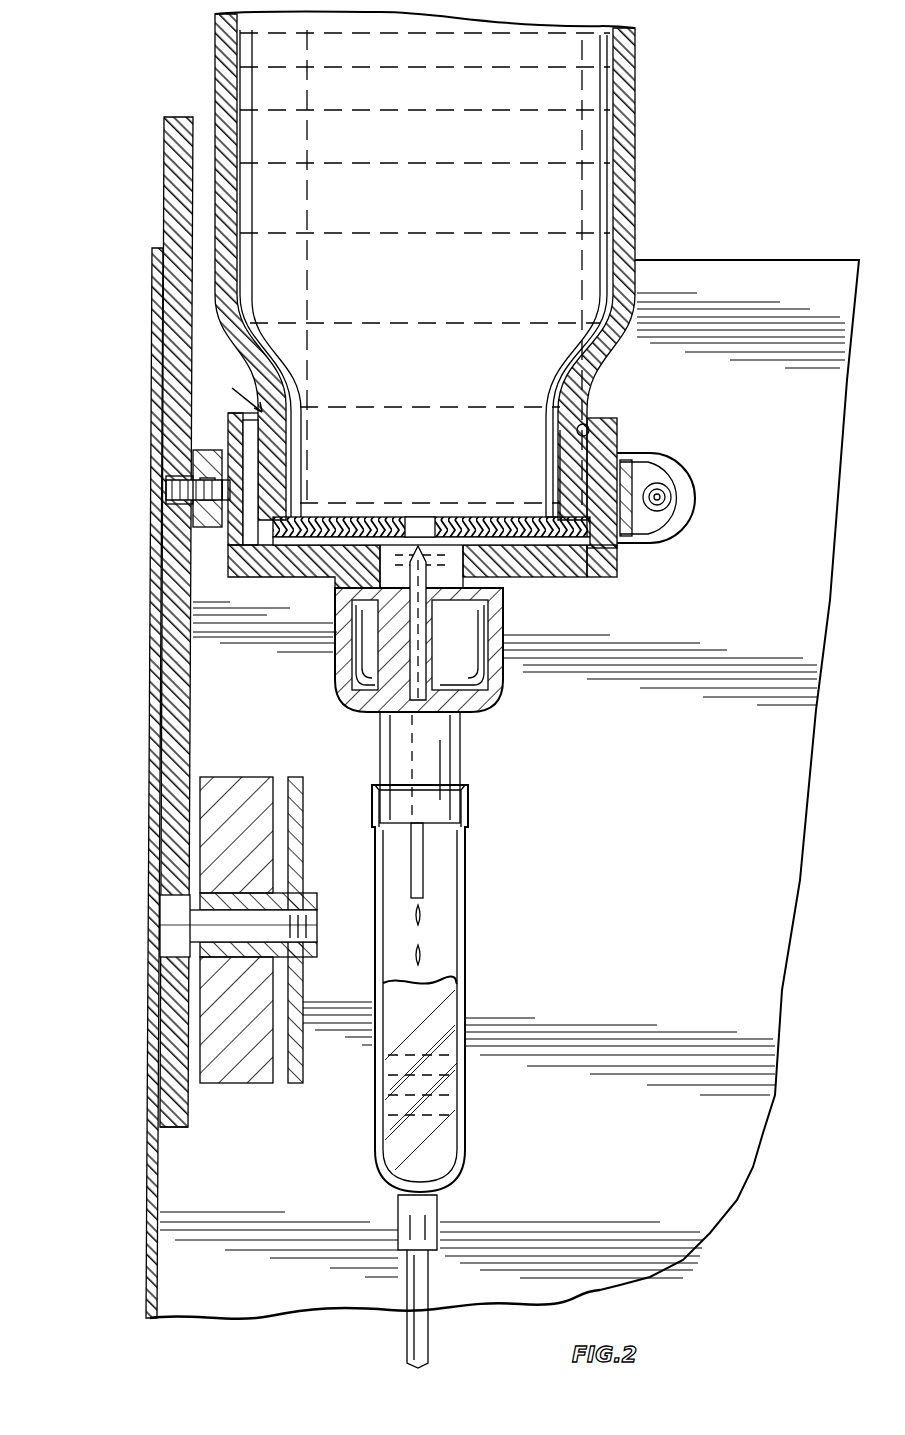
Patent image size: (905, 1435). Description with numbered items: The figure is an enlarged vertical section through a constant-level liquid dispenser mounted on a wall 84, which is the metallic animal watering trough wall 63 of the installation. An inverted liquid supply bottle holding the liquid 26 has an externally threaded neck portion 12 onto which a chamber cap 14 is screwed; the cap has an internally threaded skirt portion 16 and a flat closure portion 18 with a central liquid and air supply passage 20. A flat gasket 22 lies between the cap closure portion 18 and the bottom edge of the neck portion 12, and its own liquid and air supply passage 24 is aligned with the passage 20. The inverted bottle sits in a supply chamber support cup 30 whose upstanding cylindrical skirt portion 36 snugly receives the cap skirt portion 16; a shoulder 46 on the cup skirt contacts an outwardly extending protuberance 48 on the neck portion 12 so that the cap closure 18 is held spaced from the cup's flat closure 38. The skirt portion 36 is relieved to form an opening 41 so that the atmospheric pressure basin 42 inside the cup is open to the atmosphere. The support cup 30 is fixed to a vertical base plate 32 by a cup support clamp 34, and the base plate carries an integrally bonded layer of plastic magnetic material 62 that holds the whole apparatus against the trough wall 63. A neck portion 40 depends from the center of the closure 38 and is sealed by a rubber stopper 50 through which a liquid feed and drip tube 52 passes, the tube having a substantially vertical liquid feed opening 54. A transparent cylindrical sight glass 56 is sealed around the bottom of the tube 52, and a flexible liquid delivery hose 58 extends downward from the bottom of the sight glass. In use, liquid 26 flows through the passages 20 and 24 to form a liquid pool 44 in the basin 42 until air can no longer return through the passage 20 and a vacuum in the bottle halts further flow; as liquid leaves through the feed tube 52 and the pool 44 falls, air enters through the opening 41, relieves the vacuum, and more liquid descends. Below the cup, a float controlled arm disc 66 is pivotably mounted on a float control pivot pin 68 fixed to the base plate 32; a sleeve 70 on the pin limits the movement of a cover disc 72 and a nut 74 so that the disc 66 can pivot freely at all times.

The neck portion 12 is at (563, 452).
The chamber cap 14 is at (295, 542).
The skirt portion 16 is at (290, 472).
The flat closure portion 18 is at (575, 585).
The liquid and air supply passage 20 is at (430, 525).
The flat gasket 22 is at (540, 518).
The liquid and air supply passage 24 is at (420, 520).
The liquid 26 is at (590, 195).
The supply chamber support cup 30 is at (608, 562).
The vertical base plate 32 is at (182, 1112).
The cup support clamp 34 is at (193, 508).
The cylindrical skirt portion 36 is at (612, 480).
The flat closure 38 is at (505, 578).
The neck portion 40 is at (360, 575).
The opening 41 is at (228, 440).
The atmospheric pressure basin 42 is at (245, 530).
The liquid pool 44 is at (233, 535).
The shoulder 46 is at (600, 457).
The protuberance 48 is at (585, 430).
The rubber stopper 50 is at (498, 700).
The liquid feed and drip tube 52 is at (412, 660).
The liquid feed opening 54 is at (422, 545).
The sight glass 56 is at (468, 990).
The liquid delivery hose 58 is at (420, 1347).
The plastic magnetic material 62 is at (160, 1020).
The animal watering trough wall 63 is at (150, 1200).
The float controlled arm disc 66 is at (258, 1085).
The float control pivot pin 68 is at (318, 938).
The sleeve 70 is at (235, 900).
The cover disc 72 is at (305, 845).
The nut 74 is at (310, 895).
The wall 84 is at (806, 246).